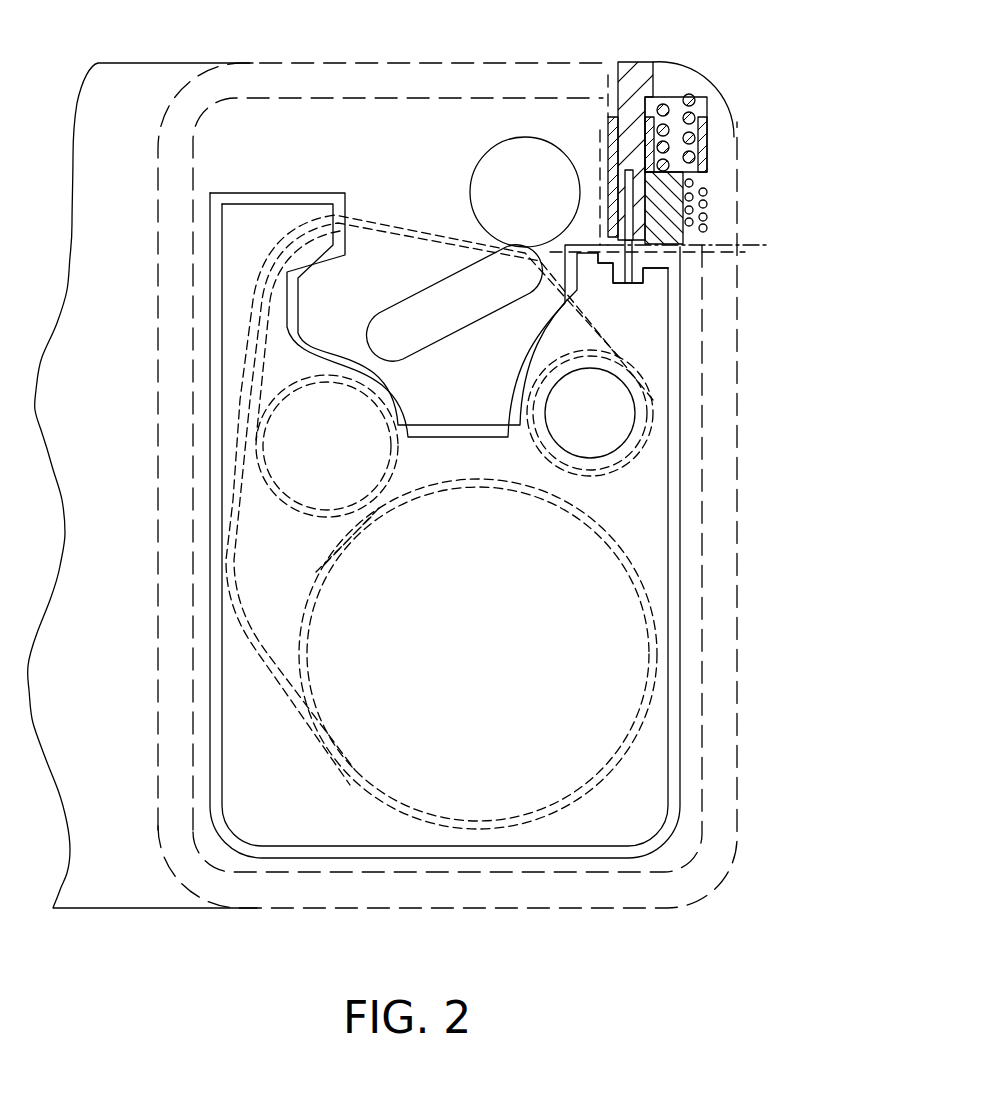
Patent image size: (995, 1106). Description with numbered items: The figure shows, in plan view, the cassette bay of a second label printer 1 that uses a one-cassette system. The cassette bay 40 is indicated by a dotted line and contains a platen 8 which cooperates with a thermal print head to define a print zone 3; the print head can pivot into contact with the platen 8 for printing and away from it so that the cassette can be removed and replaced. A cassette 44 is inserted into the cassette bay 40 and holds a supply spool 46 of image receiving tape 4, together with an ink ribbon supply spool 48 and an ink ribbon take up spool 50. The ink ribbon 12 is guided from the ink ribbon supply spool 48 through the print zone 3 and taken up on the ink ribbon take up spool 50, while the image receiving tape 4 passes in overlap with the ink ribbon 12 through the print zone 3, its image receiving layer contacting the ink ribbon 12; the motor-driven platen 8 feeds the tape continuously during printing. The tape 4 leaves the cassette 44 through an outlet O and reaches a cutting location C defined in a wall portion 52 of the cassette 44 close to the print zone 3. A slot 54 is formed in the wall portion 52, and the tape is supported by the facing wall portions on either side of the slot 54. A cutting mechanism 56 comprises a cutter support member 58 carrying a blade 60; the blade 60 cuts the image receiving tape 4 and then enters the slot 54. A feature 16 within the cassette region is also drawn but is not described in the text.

The second label printer 1 is at (242, 922).
The print zone 3 is at (472, 232).
The image receiving tape 4 is at (767, 245).
The platen 8 is at (527, 137).
The ink ribbon 12 is at (276, 248).
The slot 16 is at (417, 297).
The cassette bay 40 is at (712, 868).
The cassette 44 is at (682, 537).
The supply spool 46 is at (343, 773).
The ink ribbon supply spool 48 is at (275, 455).
The ink ribbon take up spool 50 is at (622, 420).
The wall portion 52 is at (643, 255).
The slot 54 is at (628, 287).
The cutting mechanism 56 is at (704, 71).
The cutter support member 58 is at (656, 73).
The blade 60 is at (630, 172).
The outlet O is at (685, 212).
The cutting location C is at (684, 240).